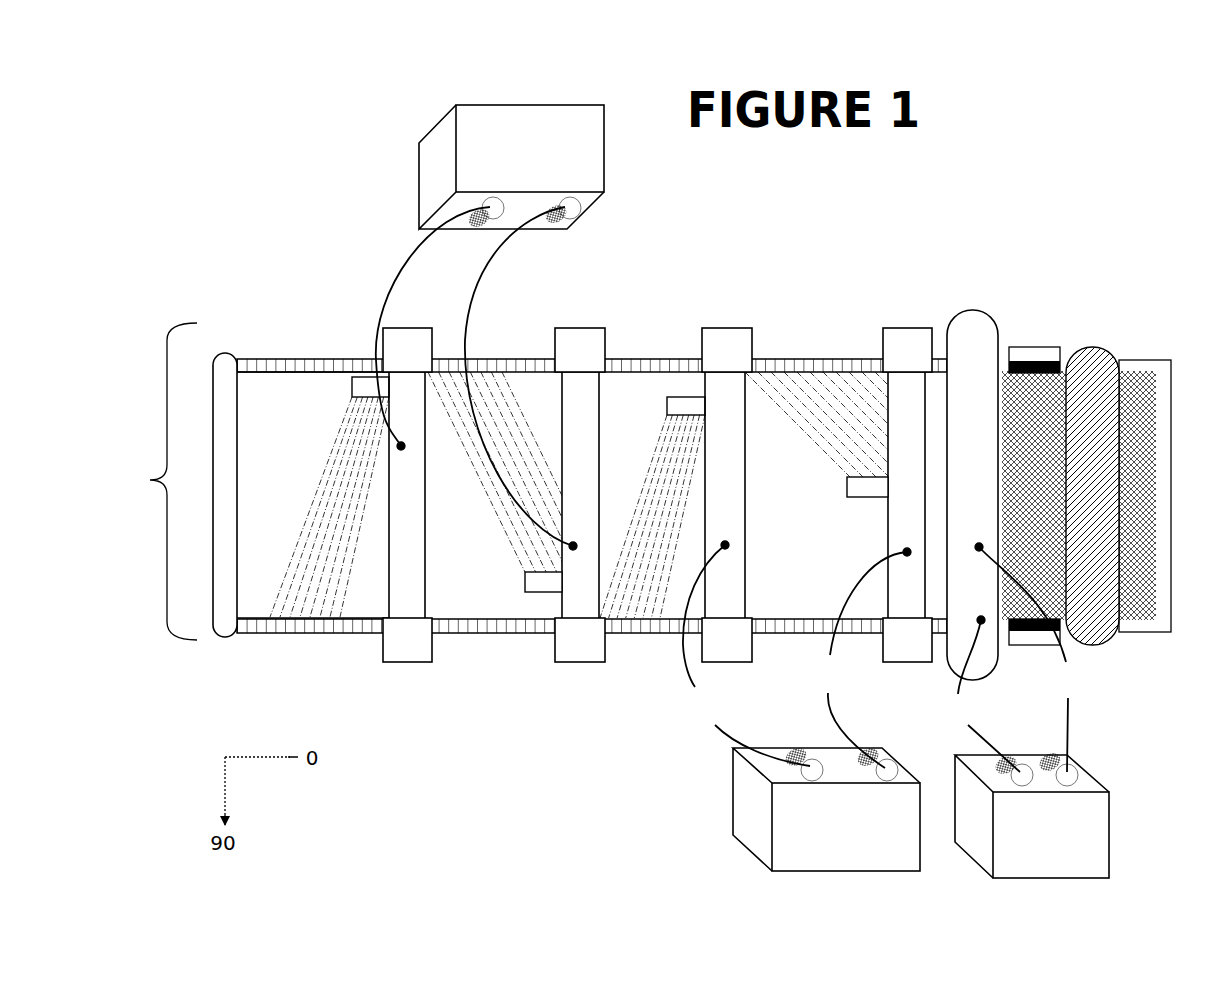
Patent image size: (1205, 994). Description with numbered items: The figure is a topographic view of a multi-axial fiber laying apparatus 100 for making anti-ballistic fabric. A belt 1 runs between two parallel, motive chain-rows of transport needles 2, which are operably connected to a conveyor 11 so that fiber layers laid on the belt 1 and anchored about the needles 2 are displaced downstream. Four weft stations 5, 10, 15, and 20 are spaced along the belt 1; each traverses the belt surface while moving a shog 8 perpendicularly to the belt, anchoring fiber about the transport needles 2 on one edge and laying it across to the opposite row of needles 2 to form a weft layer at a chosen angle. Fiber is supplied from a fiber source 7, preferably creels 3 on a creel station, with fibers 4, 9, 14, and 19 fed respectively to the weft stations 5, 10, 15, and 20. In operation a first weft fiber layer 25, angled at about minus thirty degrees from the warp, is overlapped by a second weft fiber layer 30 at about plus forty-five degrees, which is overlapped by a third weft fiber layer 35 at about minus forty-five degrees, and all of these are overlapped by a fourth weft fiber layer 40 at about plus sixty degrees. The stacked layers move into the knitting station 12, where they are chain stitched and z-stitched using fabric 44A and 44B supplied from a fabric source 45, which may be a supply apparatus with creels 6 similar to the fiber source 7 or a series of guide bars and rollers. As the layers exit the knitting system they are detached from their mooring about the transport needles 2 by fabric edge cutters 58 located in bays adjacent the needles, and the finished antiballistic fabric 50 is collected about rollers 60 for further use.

The belt 1 is at (313, 495).
The transport needles 2 is at (362, 356).
The creels 3 is at (468, 230).
The fiber 4 is at (432, 328).
The weft station 5 is at (407, 495).
The creels 6 is at (1010, 756).
The fiber source 7 is at (669, 488).
The shog 8 is at (348, 391).
The fiber 9 is at (520, 378).
The weft station 10 is at (580, 495).
The conveyor 11 is at (223, 348).
The knitting station 12 is at (972, 495).
The fiber 14 is at (746, 653).
The weft station 15 is at (727, 495).
The fiber 19 is at (861, 658).
The weft station 20 is at (907, 495).
The first weft fiber layer 25 is at (343, 575).
The second weft fiber layer 30 is at (508, 535).
The third weft fiber layer 35 is at (665, 584).
The fourth weft fiber layer 40 is at (855, 402).
The fabric 44A is at (979, 694).
The fabric 44B is at (1039, 657).
The fabric source 45 is at (1032, 816).
The antiballistic fabric 50 is at (1079, 495).
The fabric edge cutters 58 is at (1031, 346).
The rollers 60 is at (1120, 339).
The fiber laying apparatus 100 is at (129, 481).